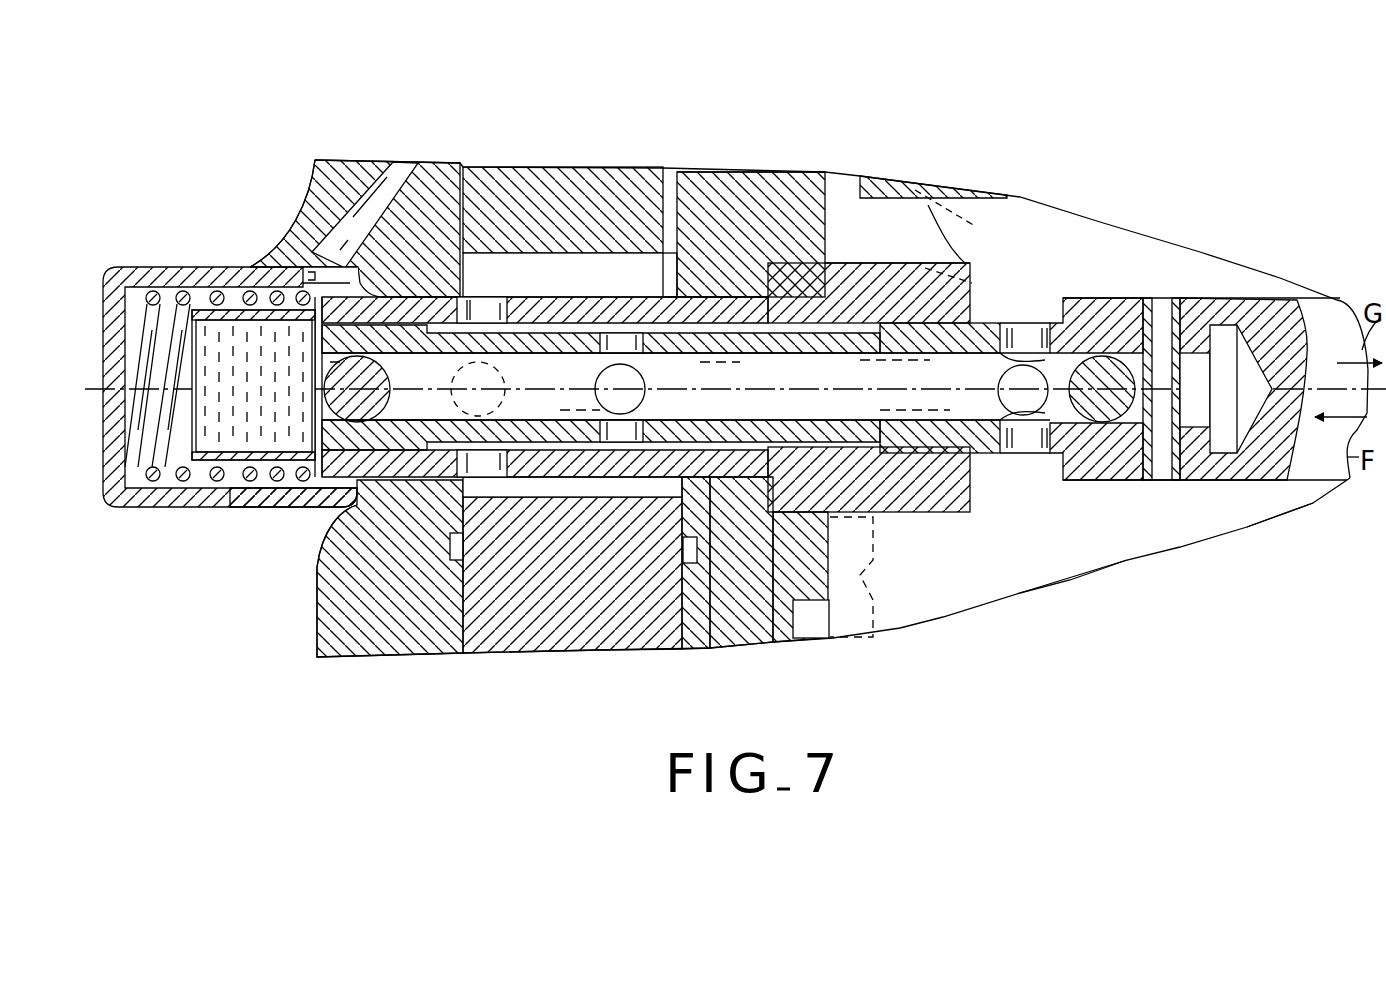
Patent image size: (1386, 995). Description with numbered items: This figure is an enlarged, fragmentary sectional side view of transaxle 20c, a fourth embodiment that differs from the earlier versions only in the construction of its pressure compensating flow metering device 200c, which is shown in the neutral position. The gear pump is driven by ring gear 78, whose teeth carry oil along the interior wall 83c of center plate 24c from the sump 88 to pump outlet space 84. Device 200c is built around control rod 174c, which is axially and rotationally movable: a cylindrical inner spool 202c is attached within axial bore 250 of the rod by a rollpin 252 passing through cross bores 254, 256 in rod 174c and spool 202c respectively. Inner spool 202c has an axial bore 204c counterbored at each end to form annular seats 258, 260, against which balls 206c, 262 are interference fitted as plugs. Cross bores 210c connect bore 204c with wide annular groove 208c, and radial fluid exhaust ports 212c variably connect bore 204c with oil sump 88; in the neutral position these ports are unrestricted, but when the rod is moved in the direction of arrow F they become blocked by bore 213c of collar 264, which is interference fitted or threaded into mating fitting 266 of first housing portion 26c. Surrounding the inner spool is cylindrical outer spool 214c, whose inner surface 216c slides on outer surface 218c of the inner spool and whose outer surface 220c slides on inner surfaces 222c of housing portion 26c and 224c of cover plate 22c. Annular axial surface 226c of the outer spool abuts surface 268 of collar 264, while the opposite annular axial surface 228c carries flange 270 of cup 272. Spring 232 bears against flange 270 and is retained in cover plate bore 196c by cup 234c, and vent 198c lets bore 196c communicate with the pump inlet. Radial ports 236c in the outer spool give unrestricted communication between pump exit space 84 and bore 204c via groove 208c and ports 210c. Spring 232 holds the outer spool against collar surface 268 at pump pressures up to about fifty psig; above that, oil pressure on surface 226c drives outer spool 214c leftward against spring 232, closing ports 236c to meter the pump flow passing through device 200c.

The transaxle 20c is at (1115, 176).
The cover plate 22c is at (332, 560).
The housing body section 24c is at (523, 633).
The first housing portion 26c is at (763, 182).
The ring gear 78 is at (564, 182).
The annular chamber 83c is at (612, 493).
The gear pump outlet space 84 is at (645, 277).
The interior sump portion 88 is at (1292, 612).
The control rod 174c is at (1097, 298).
The cover plate bore 196c is at (240, 507).
The vent 198c is at (333, 218).
The pressure compensating flow metering device 200c is at (1078, 635).
The inner spool 202c is at (412, 297).
The axial bore 204c is at (710, 356).
The ball 206c is at (385, 405).
The annular groove 208c is at (543, 333).
The cross bores 210c is at (648, 400).
The radial fluid exhaust ports 212c is at (998, 381).
The bore 213c is at (965, 325).
The outer spool 214c is at (712, 470).
The cylindrical inner surface 216c is at (747, 447).
The cylindrical outer surface 218c is at (400, 325).
The cylindrical outer surface 220c is at (460, 300).
The cylindrical inner surface 222c is at (717, 297).
The cylindrical inner surface 224c is at (377, 300).
The annular axial surface 226c is at (792, 263).
The annular axial surface 228c is at (312, 315).
The spring 232 is at (170, 478).
The cup 234c is at (115, 267).
The radial ports 236c is at (503, 375).
The axial bore 250 is at (1215, 440).
The rollpin 252 is at (1188, 298).
The cross bore 254 is at (1160, 483).
The cross bore 256 is at (1167, 343).
The annular seat 258 is at (388, 372).
The annular seat 260 is at (1040, 455).
The ball 262 is at (1085, 362).
The collar 264 is at (872, 263).
The mating fitting 266 is at (840, 263).
The surface 268 is at (740, 297).
The flange 270 is at (307, 460).
The cup 272 is at (158, 470).